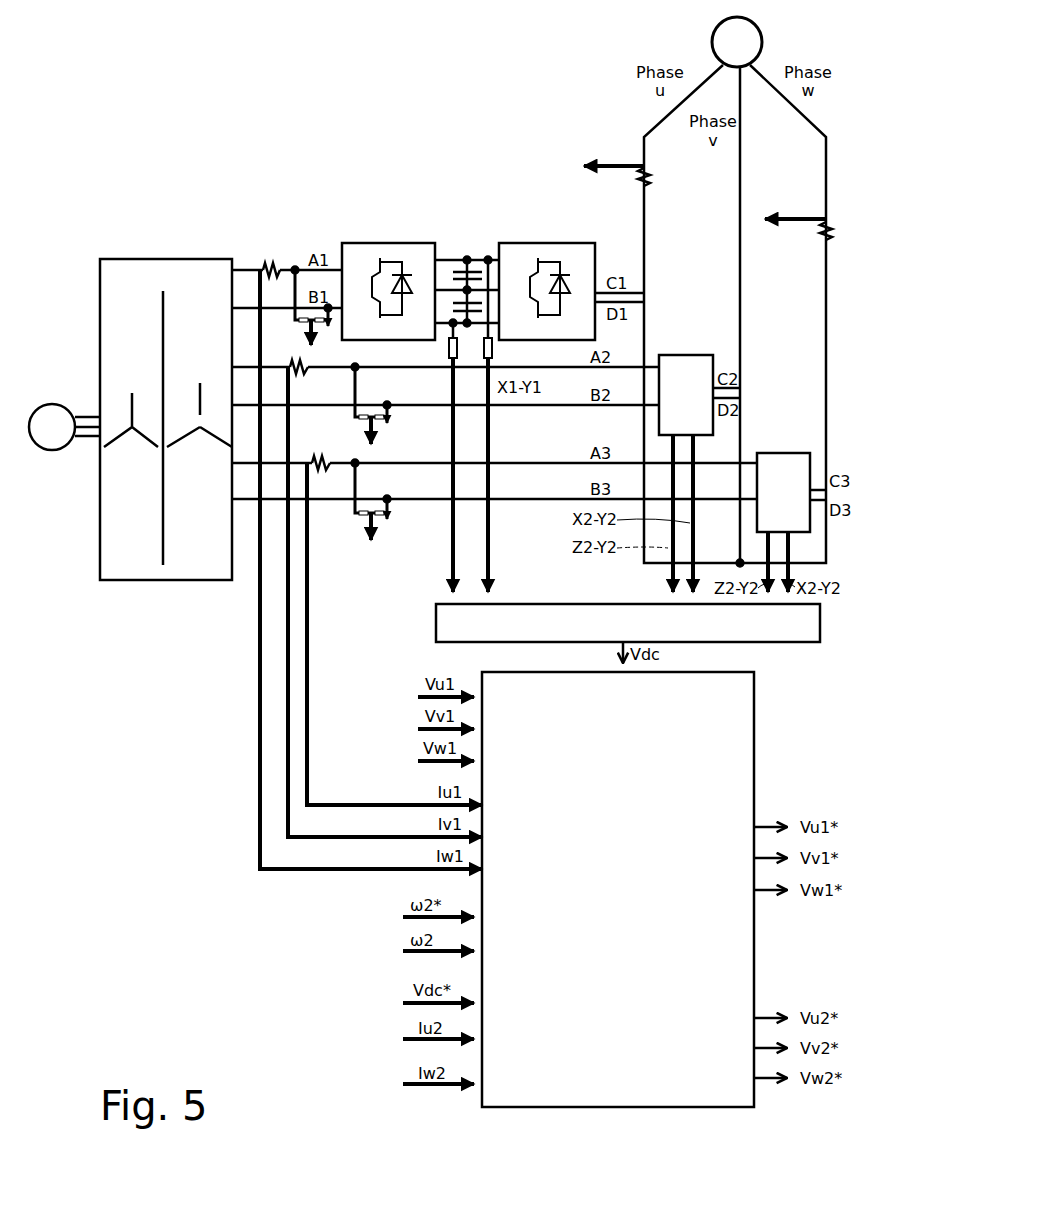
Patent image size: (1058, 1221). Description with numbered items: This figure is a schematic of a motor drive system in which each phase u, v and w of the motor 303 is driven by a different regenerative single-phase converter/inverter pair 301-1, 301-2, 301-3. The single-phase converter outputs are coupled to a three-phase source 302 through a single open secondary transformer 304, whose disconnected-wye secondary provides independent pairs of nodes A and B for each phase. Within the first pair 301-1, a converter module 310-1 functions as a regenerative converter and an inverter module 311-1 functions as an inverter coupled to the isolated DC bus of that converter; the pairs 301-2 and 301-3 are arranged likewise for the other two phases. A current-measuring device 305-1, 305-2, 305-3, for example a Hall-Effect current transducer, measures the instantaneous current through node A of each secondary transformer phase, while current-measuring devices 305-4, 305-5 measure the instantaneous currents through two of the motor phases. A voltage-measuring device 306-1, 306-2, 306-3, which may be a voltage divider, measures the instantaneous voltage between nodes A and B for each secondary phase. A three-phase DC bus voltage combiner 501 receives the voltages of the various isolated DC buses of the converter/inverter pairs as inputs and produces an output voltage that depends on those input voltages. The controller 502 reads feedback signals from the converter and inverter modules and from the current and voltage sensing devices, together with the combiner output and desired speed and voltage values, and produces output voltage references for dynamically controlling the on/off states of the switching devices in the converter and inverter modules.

The three-phase source 302 is at (52, 402).
The motor 303 is at (711, 36).
The transformer 304 is at (161, 257).
The current-measuring device 305-1 is at (270, 262).
The current-measuring device 305-2 is at (303, 371).
The current-measuring device 305-3 is at (315, 458).
The current-measuring device 305-4 is at (652, 176).
The current-measuring device 305-5 is at (820, 237).
The voltage-measuring device 306-1 is at (320, 348).
The voltage-measuring device 306-2 is at (385, 438).
The voltage-measuring device 306-3 is at (387, 536).
The converter/inverter pair 301-1 is at (345, 200).
The converter/inverter pair 301-2 is at (692, 351).
The converter/inverter pair 301-3 is at (787, 449).
The converter module 310-1 is at (385, 241).
The inverter module 311-1 is at (534, 241).
The DC bus voltage combiner 501 is at (628, 623).
The controller 502 is at (618, 889).